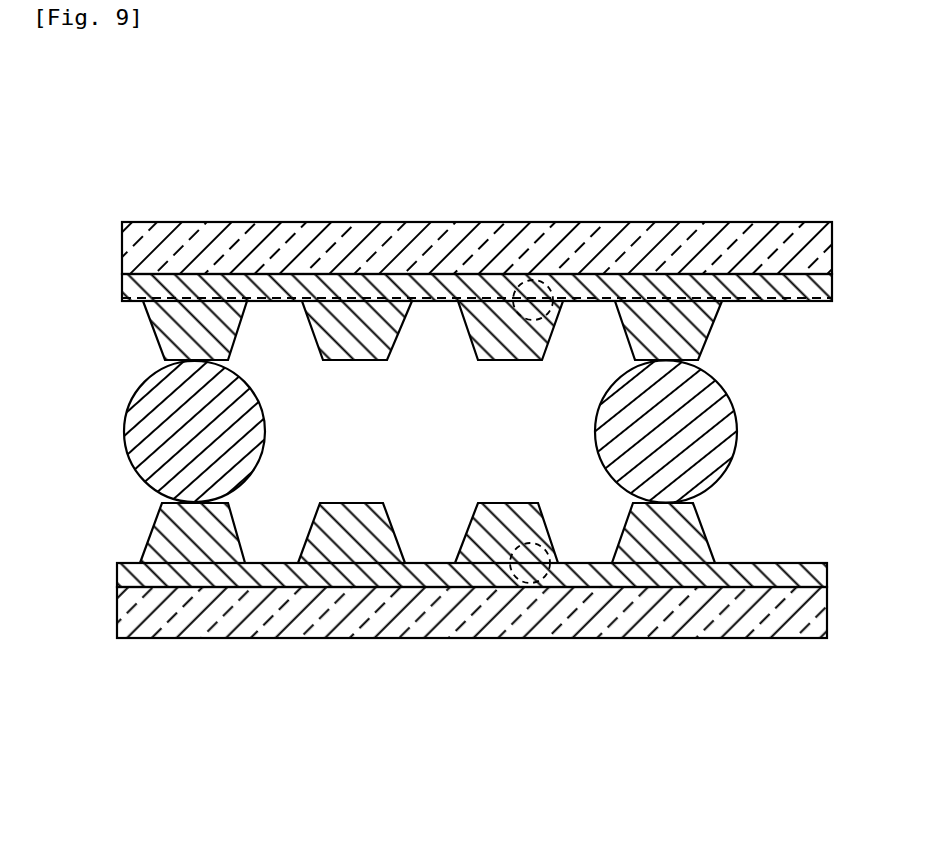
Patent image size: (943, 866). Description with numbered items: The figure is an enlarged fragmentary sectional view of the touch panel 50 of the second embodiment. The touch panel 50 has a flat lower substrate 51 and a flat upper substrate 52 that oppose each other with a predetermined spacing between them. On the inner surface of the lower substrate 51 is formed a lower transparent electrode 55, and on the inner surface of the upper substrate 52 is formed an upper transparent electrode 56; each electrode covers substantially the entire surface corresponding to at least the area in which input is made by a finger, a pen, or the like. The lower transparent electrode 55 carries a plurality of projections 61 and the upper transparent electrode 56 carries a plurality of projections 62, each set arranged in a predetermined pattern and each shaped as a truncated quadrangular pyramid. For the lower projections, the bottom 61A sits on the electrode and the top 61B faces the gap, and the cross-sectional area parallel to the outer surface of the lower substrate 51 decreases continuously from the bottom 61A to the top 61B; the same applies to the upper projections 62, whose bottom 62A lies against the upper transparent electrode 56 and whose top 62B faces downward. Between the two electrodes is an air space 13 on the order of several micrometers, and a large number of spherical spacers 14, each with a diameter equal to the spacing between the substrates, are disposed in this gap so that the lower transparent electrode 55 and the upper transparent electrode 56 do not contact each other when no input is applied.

The touch panel 50 is at (503, 166).
The upper substrate 52 is at (638, 226).
The upper transparent electrode 56 is at (777, 299).
The projections 62 is at (704, 329).
The bottom of the projection 62A is at (542, 281).
The top of the projection 62B is at (498, 362).
The air space 13 is at (318, 406).
The spherical spacers 14 is at (125, 436).
The lower transparent electrode 55 is at (784, 572).
The projections 61 is at (692, 521).
The bottom of the projection 61A is at (530, 583).
The top of the projection 61B is at (513, 502).
The lower substrate 51 is at (412, 640).